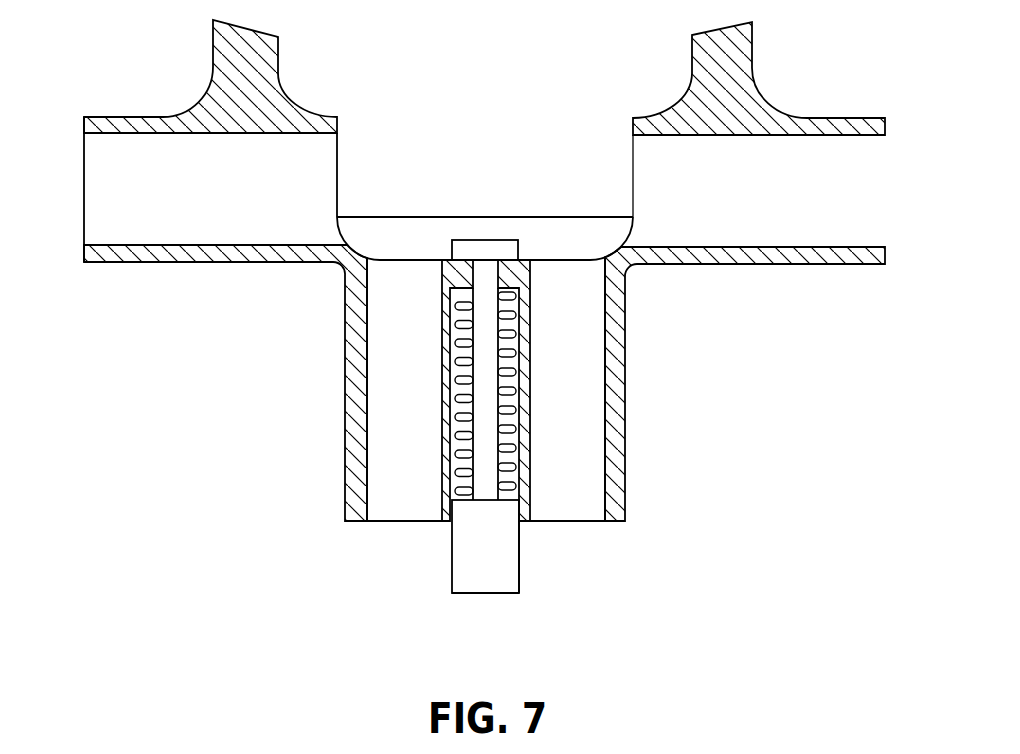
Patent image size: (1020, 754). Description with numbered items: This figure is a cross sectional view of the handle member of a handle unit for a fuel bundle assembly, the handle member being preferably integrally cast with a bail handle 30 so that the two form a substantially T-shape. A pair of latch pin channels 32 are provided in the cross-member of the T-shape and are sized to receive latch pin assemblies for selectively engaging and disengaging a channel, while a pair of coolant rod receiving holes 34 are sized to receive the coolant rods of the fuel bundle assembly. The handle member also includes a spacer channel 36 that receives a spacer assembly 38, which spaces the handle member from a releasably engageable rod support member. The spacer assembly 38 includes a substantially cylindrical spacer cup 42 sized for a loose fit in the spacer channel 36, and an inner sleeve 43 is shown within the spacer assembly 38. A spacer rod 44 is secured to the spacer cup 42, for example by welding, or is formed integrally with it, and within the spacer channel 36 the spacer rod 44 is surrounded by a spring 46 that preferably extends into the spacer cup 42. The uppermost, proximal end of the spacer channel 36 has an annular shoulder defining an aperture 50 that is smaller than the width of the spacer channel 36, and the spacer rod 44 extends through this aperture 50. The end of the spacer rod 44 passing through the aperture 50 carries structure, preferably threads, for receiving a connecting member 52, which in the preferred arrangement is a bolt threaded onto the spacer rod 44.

The bail handle 30 is at (752, 94).
The latch pin channels 32 is at (102, 224).
The coolant rod receiving holes 34 is at (387, 410).
The spacer channel 36 is at (463, 458).
The spacer assembly 38 is at (535, 552).
The spacer cup 42 is at (462, 565).
The inner sleeve 43 is at (445, 277).
The spacer rod 44 is at (480, 313).
The spring 46 is at (517, 357).
The aperture 50 is at (524, 299).
The connecting member 52 is at (482, 250).